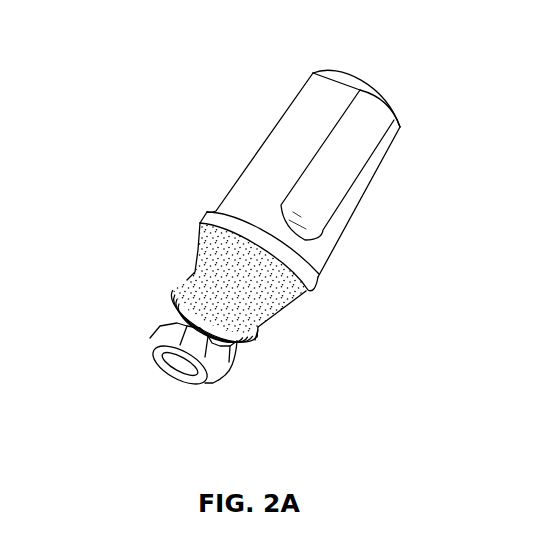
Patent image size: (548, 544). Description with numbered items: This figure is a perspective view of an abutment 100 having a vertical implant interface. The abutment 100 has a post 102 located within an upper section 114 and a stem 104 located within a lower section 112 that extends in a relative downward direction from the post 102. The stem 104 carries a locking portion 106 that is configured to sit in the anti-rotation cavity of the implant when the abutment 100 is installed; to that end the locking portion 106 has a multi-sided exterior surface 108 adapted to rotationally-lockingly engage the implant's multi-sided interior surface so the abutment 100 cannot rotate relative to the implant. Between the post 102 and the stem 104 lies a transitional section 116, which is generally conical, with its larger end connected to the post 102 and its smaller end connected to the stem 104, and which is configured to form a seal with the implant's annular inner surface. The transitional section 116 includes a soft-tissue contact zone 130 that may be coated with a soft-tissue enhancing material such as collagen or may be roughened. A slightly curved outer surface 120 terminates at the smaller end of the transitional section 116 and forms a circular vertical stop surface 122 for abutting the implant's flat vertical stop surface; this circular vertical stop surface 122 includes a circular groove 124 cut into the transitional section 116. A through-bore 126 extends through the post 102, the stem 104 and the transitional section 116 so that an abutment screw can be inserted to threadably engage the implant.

The abutment 100 is at (407, 105).
The post 102 is at (278, 127).
The stem 104 is at (156, 346).
The locking portion 106 is at (240, 355).
The multi-sided exterior surface 108 is at (175, 325).
The lower section 112 is at (170, 398).
The upper section 114 is at (390, 50).
The transitional section 116 is at (285, 290).
The outer surface 120 is at (178, 305).
The circular vertical stop surface 122 is at (257, 337).
The circular groove 124 is at (257, 340).
The through-bore 126 is at (165, 368).
The soft-tissue contact zone 130 is at (200, 270).